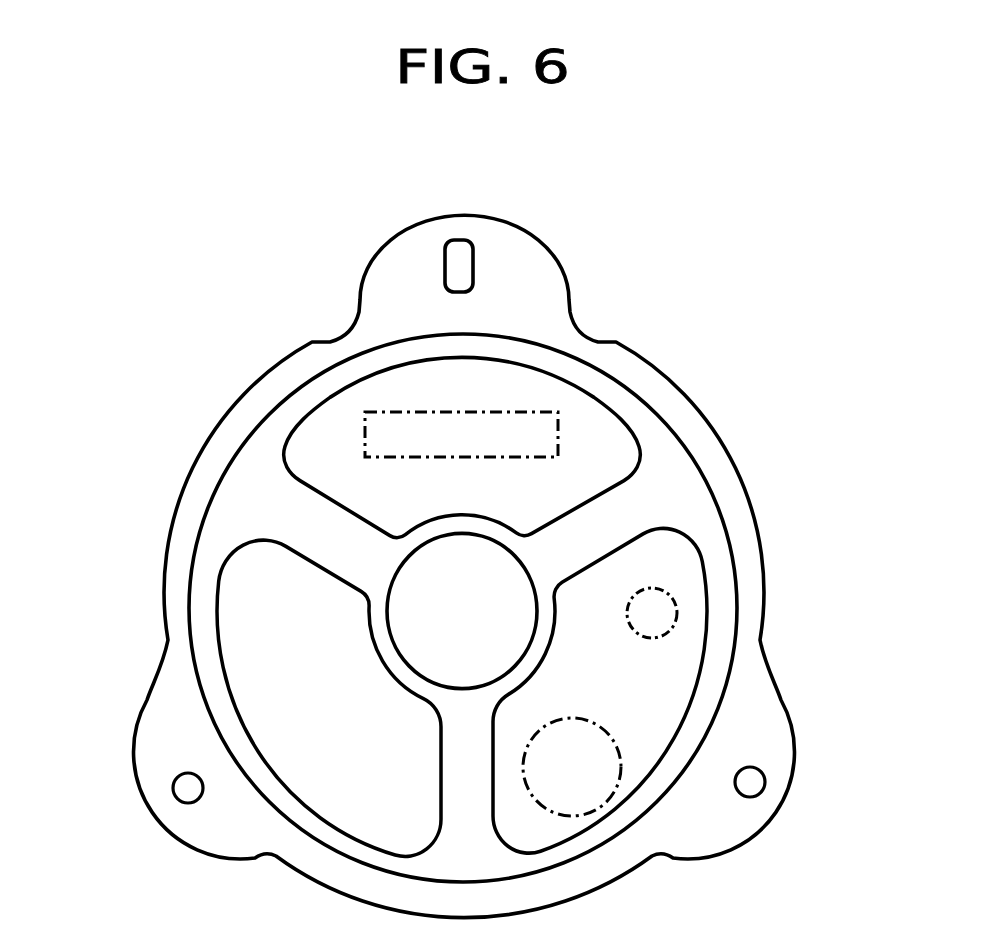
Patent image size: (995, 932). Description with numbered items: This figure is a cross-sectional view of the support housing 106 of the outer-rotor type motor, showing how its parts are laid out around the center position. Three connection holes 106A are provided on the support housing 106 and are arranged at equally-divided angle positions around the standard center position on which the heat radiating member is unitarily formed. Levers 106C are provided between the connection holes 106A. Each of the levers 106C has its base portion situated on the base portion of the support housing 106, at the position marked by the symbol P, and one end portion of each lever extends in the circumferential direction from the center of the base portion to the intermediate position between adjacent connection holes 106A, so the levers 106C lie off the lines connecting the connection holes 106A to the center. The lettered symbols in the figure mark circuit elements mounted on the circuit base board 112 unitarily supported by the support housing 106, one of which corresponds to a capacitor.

The support housing 106 is at (697, 410).
The connection holes 106A is at (463, 262).
The levers 106C is at (620, 536).
The circuit base board 112 is at (683, 650).